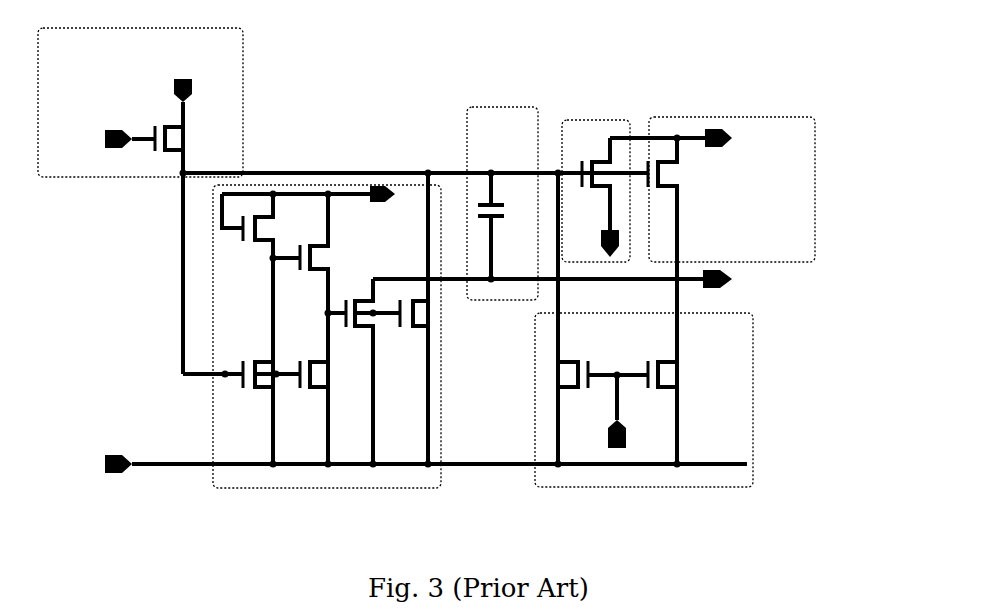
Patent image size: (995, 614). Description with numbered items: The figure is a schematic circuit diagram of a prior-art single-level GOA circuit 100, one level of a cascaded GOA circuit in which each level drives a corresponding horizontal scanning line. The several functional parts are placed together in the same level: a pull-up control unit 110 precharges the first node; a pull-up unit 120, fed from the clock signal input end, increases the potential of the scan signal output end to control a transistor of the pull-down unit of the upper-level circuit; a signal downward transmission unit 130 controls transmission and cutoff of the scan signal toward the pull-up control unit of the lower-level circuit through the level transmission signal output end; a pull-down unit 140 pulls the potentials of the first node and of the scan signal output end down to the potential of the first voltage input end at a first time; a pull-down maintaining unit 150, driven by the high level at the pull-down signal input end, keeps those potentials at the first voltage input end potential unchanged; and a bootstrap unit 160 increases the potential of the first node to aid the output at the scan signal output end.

The single-level GOA circuit 100 is at (790, 26).
The pull-up control unit 110 is at (244, 82).
The pull-up unit 120 is at (818, 140).
The signal downward transmission unit 130 is at (594, 120).
The pull-down unit 140 is at (754, 345).
The pull-down maintaining unit 150 is at (441, 480).
The bootstrap unit 160 is at (493, 107).